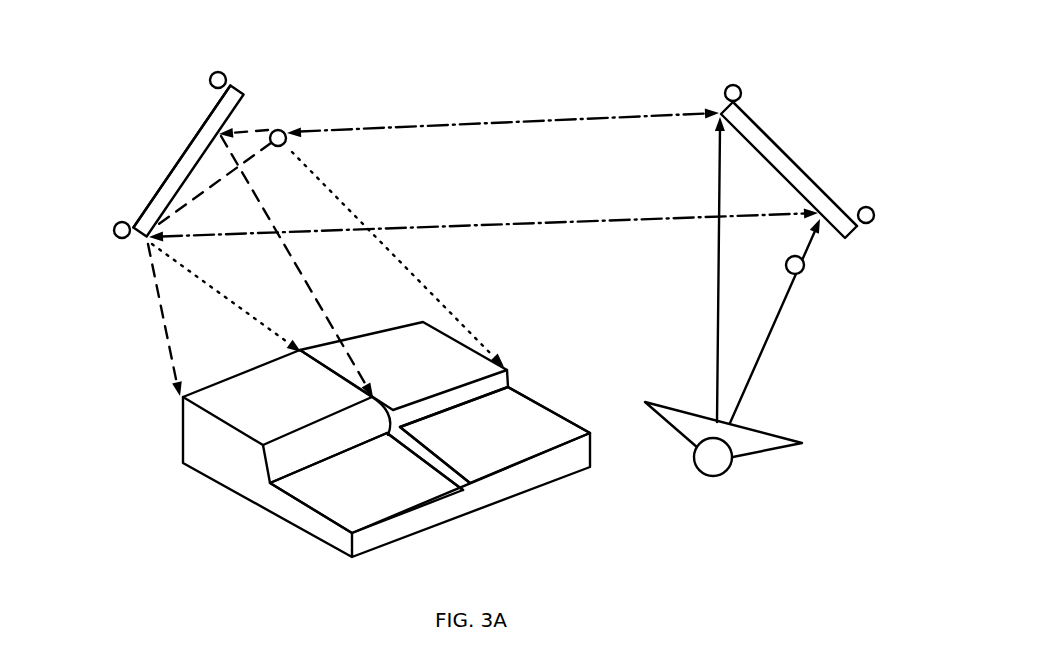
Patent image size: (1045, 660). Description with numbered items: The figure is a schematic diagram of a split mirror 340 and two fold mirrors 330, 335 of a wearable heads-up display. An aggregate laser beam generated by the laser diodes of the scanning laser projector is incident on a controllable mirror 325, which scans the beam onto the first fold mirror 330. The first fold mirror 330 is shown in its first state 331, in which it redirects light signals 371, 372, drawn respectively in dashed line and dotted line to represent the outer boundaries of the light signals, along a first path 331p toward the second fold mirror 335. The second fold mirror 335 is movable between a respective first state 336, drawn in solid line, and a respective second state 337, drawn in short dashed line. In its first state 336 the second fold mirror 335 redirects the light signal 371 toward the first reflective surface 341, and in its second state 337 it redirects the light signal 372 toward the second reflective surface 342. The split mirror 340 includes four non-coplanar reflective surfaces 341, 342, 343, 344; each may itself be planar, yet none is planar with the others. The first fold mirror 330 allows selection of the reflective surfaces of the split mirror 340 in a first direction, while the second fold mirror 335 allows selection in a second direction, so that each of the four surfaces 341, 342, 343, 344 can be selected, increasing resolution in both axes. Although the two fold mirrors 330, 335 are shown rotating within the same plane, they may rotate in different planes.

The controllable mirror 325 is at (748, 457).
The fold mirror 330 is at (790, 148).
The first state 331 is at (846, 178).
The first path 331p is at (583, 120).
The fold mirror 335 is at (188, 148).
The first state 336 is at (142, 187).
The second state 337 is at (268, 102).
The split mirror 340 is at (330, 439).
The first reflective surface 341 is at (283, 427).
The second reflective surface 342 is at (445, 379).
The third reflective surface 343 is at (377, 504).
The fourth reflective surface 344 is at (505, 451).
The light signal 371 is at (152, 278).
The light signal 372 is at (327, 190).